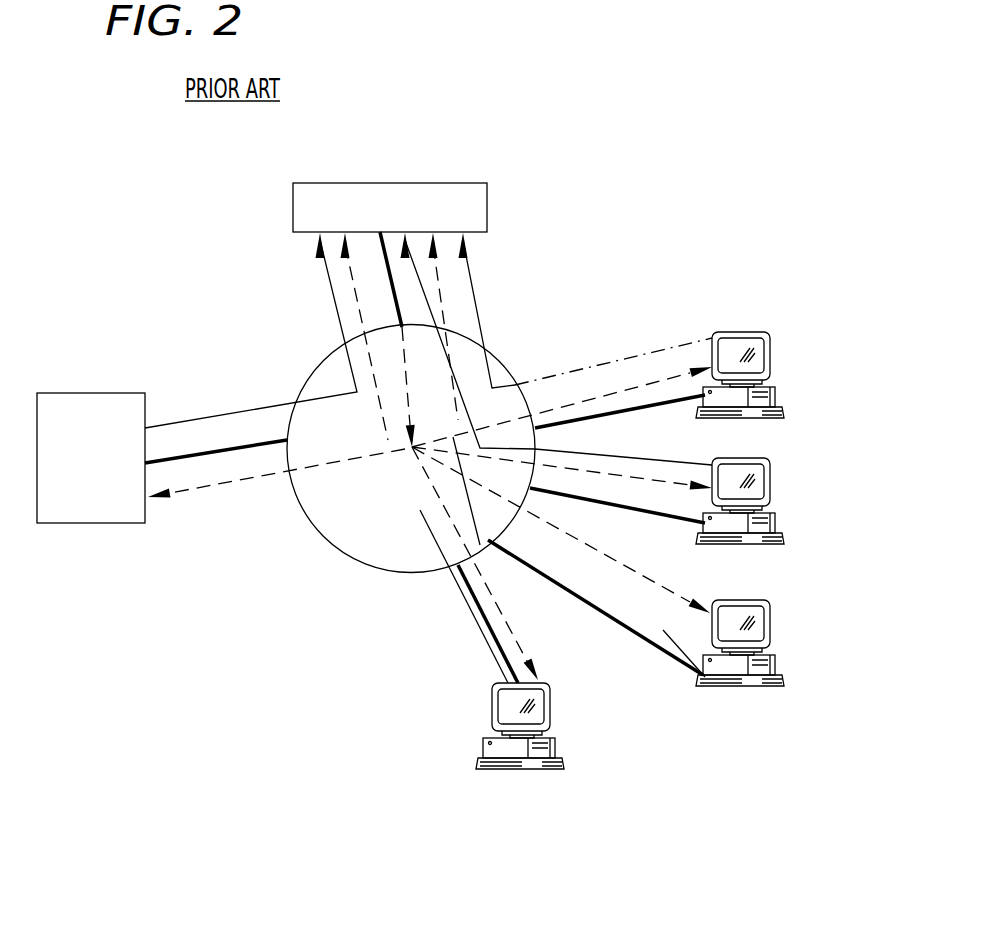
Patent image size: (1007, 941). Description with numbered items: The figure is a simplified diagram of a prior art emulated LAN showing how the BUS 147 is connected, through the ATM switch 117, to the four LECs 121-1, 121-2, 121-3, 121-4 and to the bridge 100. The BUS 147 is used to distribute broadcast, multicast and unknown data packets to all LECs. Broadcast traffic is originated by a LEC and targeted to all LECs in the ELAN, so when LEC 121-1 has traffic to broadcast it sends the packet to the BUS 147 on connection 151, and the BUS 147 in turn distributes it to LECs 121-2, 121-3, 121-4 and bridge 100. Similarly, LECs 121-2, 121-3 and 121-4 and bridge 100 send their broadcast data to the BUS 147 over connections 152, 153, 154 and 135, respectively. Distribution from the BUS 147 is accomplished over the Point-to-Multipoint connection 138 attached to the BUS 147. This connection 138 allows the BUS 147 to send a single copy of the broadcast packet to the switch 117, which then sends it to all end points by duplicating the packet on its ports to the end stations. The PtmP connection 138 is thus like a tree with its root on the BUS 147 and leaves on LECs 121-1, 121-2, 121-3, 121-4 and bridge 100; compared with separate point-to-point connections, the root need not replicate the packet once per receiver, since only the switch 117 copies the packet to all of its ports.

The BUS 147 is at (403, 183).
The bridge 100 is at (62, 395).
The ATM switch 117 is at (323, 537).
The connection 135 is at (378, 303).
The Point-to-Multipoint connection 138 is at (380, 313).
The connection 151 is at (478, 333).
The connection 152 is at (447, 313).
The connection 153 is at (417, 280).
The connection 154 is at (350, 277).
The LEC 121-1 is at (775, 353).
The LEC 121-2 is at (775, 493).
The LEC 121-3 is at (757, 597).
The LEC 121-4 is at (548, 772).